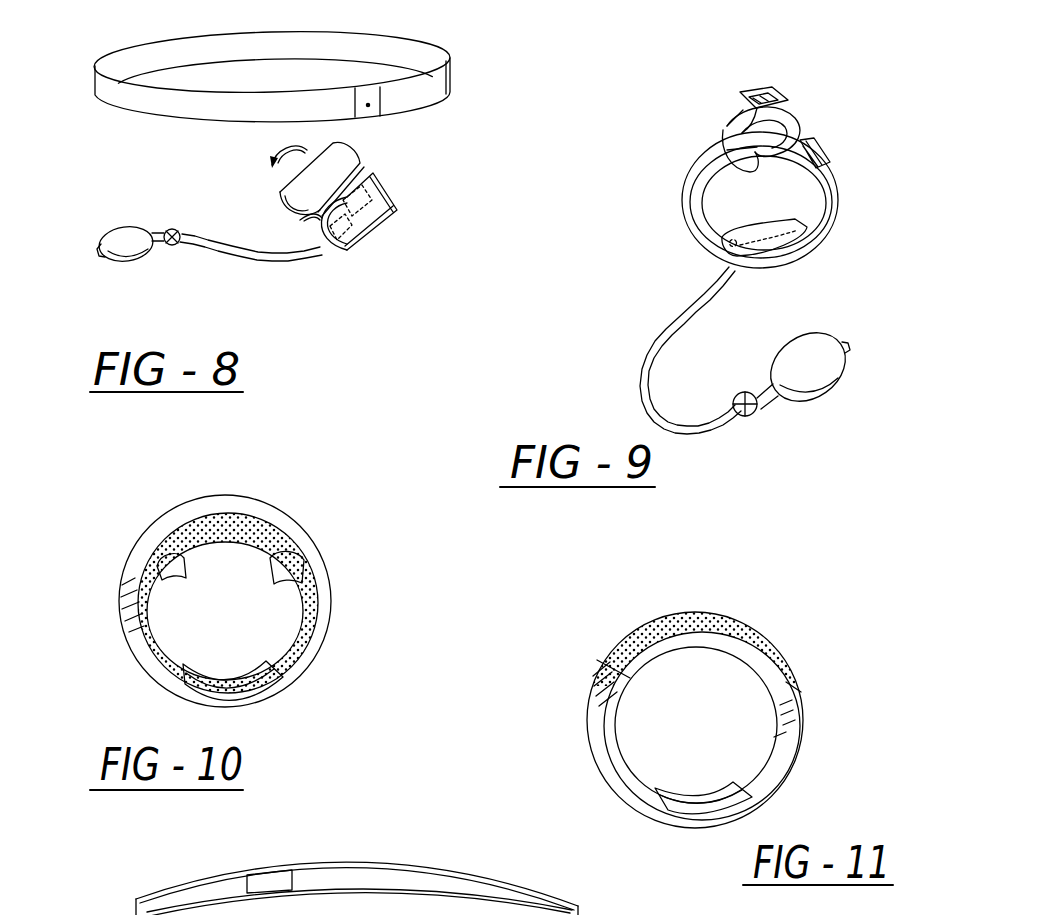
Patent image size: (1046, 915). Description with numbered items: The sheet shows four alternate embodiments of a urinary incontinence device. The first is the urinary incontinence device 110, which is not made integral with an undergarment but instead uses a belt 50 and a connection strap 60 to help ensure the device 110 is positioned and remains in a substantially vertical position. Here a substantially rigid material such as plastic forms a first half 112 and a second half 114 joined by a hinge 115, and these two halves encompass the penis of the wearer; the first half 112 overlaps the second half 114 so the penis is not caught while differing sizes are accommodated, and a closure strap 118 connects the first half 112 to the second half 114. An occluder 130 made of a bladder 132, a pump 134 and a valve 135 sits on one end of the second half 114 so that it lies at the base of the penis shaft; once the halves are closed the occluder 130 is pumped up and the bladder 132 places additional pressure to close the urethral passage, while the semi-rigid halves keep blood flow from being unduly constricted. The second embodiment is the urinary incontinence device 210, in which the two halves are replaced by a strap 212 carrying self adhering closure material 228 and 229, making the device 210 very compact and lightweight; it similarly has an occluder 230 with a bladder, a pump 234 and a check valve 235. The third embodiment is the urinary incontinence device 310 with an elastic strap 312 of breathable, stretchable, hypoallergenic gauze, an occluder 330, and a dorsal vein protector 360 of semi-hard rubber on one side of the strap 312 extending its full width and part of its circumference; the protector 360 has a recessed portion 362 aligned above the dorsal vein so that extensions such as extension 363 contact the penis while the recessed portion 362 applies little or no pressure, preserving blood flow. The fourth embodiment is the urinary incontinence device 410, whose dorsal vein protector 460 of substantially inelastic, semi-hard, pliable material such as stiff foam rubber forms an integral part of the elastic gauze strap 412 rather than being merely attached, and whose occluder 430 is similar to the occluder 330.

In FIG. 8, the belt 50 is at (311, 101).
In FIG. 8, the connection strap 60 is at (368, 105).
In FIG. 8, the urinary incontinence device 110 is at (287, 246).
In FIG. 8, the first half 112 is at (236, 179).
In FIG. 8, the second half 114 is at (398, 238).
In FIG. 8, the hinge 115 is at (313, 216).
In FIG. 8, the closure strap 118 is at (282, 210).
In FIG. 8, the occluder 130 is at (337, 246).
In FIG. 8, the bladder 132 is at (353, 240).
In FIG. 8, the pump 134 is at (117, 257).
In FIG. 8, the valve 135 is at (187, 247).
In FIG. 9, the urinary incontinence device 210 is at (747, 252).
In FIG. 9, the strap 212 is at (684, 166).
In FIG. 9, the self adhering closure material 228 is at (760, 92).
In FIG. 9, the self adhering closure material 229 is at (813, 153).
In FIG. 9, the occluder 230 is at (797, 238).
In FIG. 9, the pump 234 is at (838, 363).
In FIG. 9, the check valve 235 is at (753, 418).
In FIG. 10, the urinary incontinence device 310 is at (239, 602).
In FIG. 10, the elastic strap 312 is at (320, 570).
In FIG. 10, the occluder 330 is at (270, 686).
In FIG. 10, the dorsal vein protector 360 is at (243, 525).
In FIG. 10, the recessed portion 362 is at (290, 600).
In FIG. 10, the extension 363 is at (170, 586).
In FIG. 11, the urinary incontinence device 410 is at (691, 687).
In FIG. 11, the strap 412 is at (593, 727).
In FIG. 11, the occluder 430 is at (748, 792).
In FIG. 11, the dorsal vein protector 460 is at (690, 617).